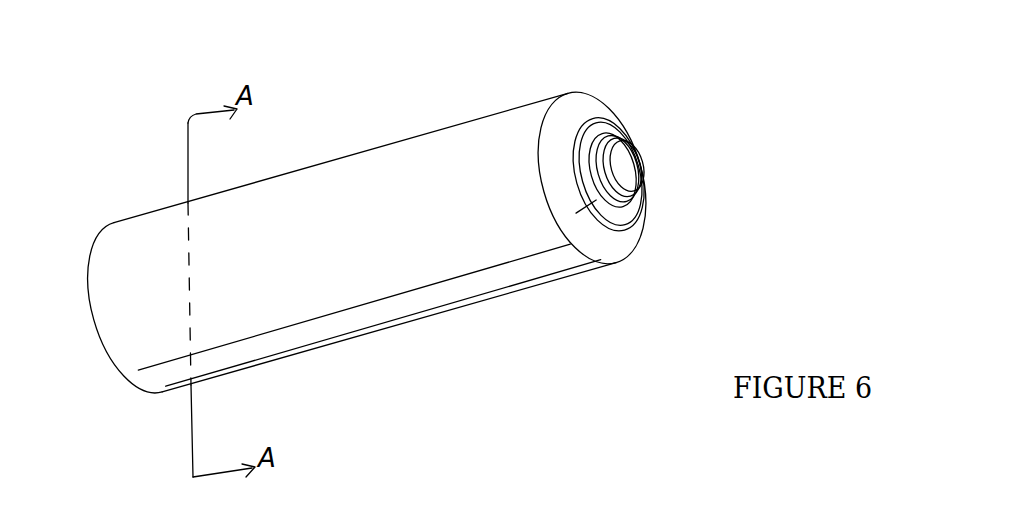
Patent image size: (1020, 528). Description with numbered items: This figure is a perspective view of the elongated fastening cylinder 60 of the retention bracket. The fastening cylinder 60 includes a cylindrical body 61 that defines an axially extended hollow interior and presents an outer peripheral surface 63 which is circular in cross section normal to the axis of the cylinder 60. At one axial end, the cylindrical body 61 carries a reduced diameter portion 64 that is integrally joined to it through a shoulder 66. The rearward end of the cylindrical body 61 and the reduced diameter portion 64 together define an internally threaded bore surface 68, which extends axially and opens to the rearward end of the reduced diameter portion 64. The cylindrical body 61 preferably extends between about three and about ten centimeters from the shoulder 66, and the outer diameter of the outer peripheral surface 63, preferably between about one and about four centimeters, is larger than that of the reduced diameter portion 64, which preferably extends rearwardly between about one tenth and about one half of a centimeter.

The elongated fastening cylinder 60 is at (594, 68).
The cylindrical body 61 is at (275, 177).
The outer peripheral surface 63 is at (389, 267).
The reduced diameter portion 64 is at (636, 222).
The shoulder 66 is at (615, 243).
The internally threaded bore surface 68 is at (620, 176).